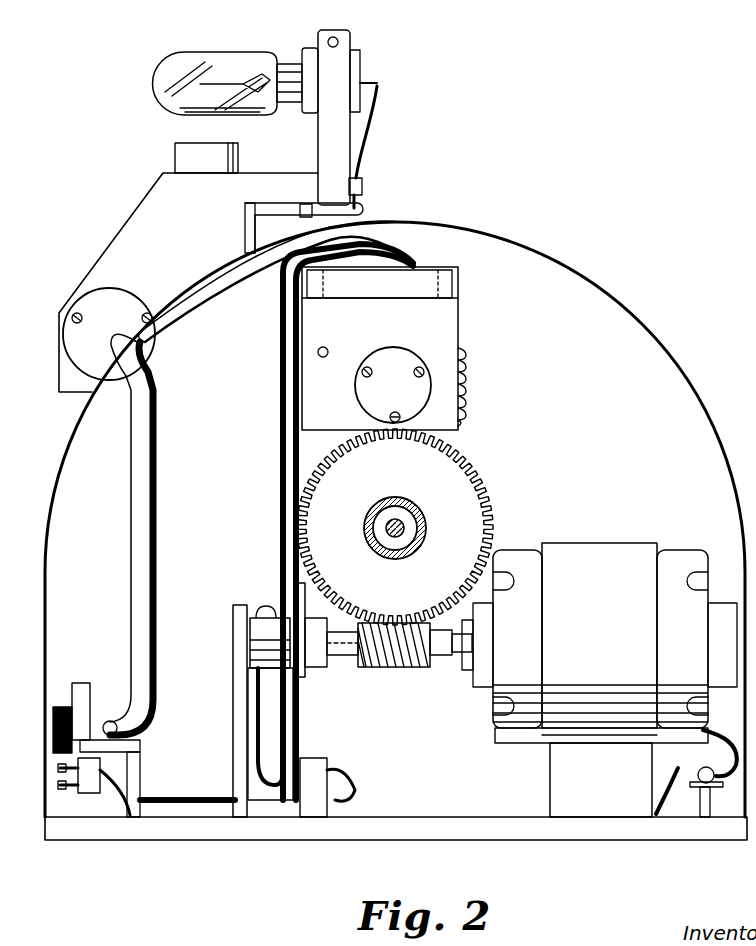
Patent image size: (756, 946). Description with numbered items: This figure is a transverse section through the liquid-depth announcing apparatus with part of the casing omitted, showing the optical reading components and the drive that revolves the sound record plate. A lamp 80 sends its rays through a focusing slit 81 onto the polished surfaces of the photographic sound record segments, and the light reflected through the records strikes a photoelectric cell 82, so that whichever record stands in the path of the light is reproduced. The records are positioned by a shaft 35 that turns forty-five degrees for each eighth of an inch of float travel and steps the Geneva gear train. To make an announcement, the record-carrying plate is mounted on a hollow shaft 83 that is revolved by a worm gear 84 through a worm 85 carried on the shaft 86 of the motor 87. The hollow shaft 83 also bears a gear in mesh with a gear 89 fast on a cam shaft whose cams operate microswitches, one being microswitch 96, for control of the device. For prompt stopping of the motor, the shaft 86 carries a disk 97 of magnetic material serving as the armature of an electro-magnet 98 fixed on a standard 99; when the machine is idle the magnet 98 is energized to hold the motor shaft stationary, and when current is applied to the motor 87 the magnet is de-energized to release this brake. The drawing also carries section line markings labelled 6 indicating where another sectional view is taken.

The lamp 80 is at (233, 55).
The focusing slit 81 is at (175, 157).
The photoelectric cell 82 is at (97, 302).
The hollow shaft 83 is at (391, 502).
The shaft 35 is at (391, 546).
The worm gear 84 is at (464, 500).
The worm 85 is at (401, 668).
The motor shaft 86 is at (350, 651).
The motor 87 is at (600, 563).
The gear 89 is at (466, 392).
The microswitch 96 is at (433, 292).
The disk of magnetic material 97 is at (306, 673).
The electro-magnet 98 is at (272, 618).
The standard 99 is at (238, 647).
The section line 6- 6 is at (298, 570).